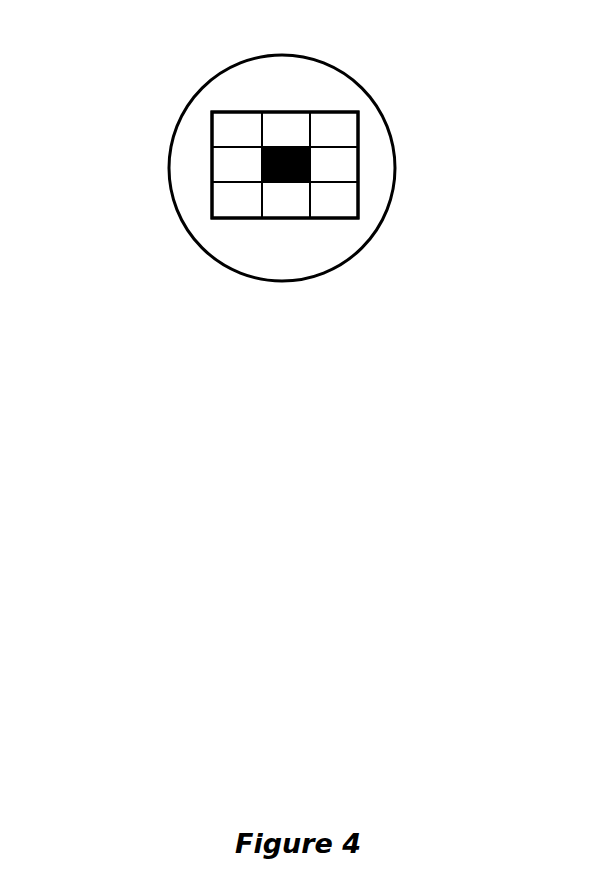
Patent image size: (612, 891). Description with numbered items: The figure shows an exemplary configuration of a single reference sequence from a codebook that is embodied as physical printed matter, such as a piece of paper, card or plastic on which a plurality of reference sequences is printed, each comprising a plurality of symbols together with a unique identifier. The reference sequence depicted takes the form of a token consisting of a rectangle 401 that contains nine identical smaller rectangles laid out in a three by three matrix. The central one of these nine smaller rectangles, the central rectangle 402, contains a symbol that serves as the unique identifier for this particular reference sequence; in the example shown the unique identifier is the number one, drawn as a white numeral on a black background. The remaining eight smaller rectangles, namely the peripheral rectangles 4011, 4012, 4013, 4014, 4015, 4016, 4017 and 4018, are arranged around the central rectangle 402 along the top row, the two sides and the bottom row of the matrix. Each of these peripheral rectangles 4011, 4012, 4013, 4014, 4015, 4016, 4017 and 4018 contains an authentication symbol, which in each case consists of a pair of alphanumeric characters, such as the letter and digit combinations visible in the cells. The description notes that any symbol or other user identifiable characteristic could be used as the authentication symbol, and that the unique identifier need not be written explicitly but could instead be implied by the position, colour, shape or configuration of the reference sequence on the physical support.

The rectangle 401 is at (192, 80).
The central rectangle 402 is at (255, 189).
The peripheral rectangle 4011 is at (202, 121).
The peripheral rectangle 4012 is at (279, 100).
The peripheral rectangle 4013 is at (338, 99).
The peripheral rectangle 4014 is at (370, 161).
The peripheral rectangle 4015 is at (368, 220).
The peripheral rectangle 4016 is at (296, 227).
The peripheral rectangle 4017 is at (242, 229).
The peripheral rectangle 4018 is at (203, 172).